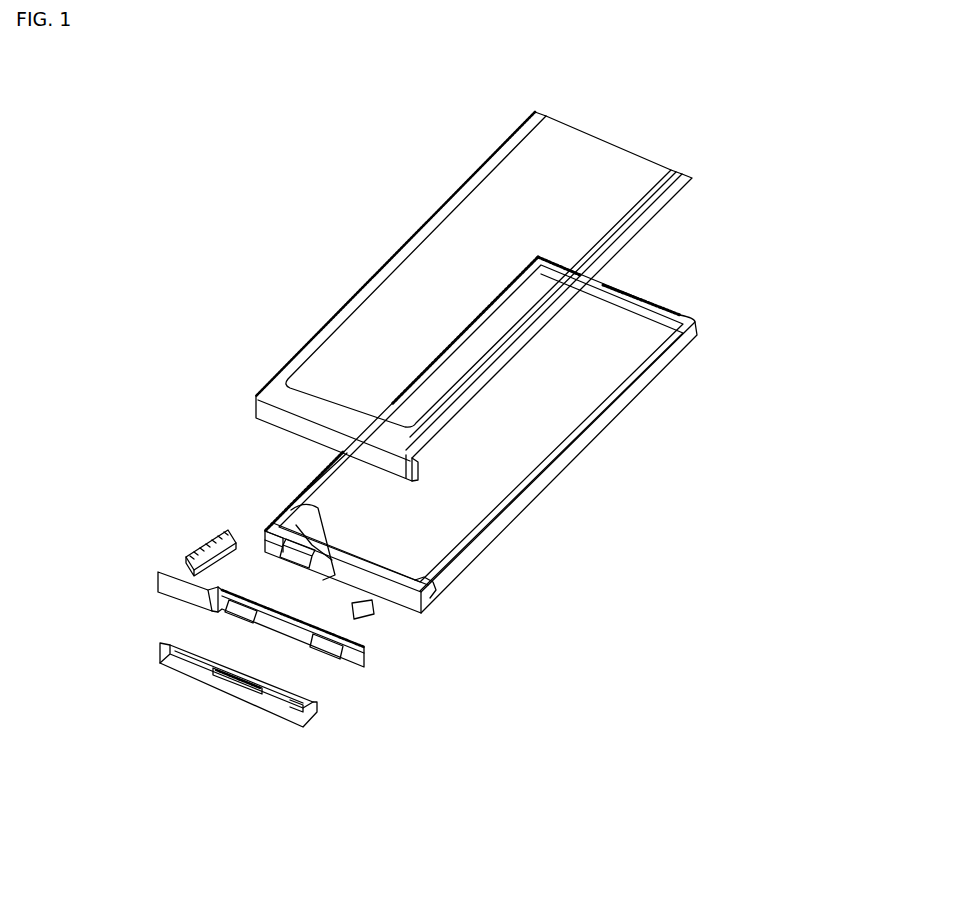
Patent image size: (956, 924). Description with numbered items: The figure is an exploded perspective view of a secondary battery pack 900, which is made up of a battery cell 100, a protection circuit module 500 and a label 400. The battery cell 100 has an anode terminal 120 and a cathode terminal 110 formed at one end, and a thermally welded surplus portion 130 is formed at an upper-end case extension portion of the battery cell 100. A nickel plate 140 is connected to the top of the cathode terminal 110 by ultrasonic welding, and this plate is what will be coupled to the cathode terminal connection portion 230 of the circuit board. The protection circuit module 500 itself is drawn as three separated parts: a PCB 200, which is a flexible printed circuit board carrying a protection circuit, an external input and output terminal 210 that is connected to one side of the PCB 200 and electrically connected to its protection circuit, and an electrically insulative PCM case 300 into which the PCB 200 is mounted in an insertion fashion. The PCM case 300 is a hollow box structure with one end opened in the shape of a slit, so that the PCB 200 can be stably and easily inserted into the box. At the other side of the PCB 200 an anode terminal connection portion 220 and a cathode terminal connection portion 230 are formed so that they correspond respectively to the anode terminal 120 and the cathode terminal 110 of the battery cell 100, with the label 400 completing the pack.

The secondary battery pack 900 is at (154, 188).
The label 400 is at (690, 174).
The battery cell 100 is at (670, 310).
The cathode terminal 110 is at (434, 600).
The anode terminal 120 is at (283, 518).
The thermally welded surplus portion 130 is at (285, 510).
The nickel plate 140 is at (367, 620).
The PCB 200 is at (135, 591).
The external input and output terminal 210 is at (203, 532).
The anode terminal connection portion 220 is at (243, 614).
The cathode terminal connection portion 230 is at (328, 645).
The PCM case 300 is at (204, 700).
The protection circuit module 500 is at (433, 680).